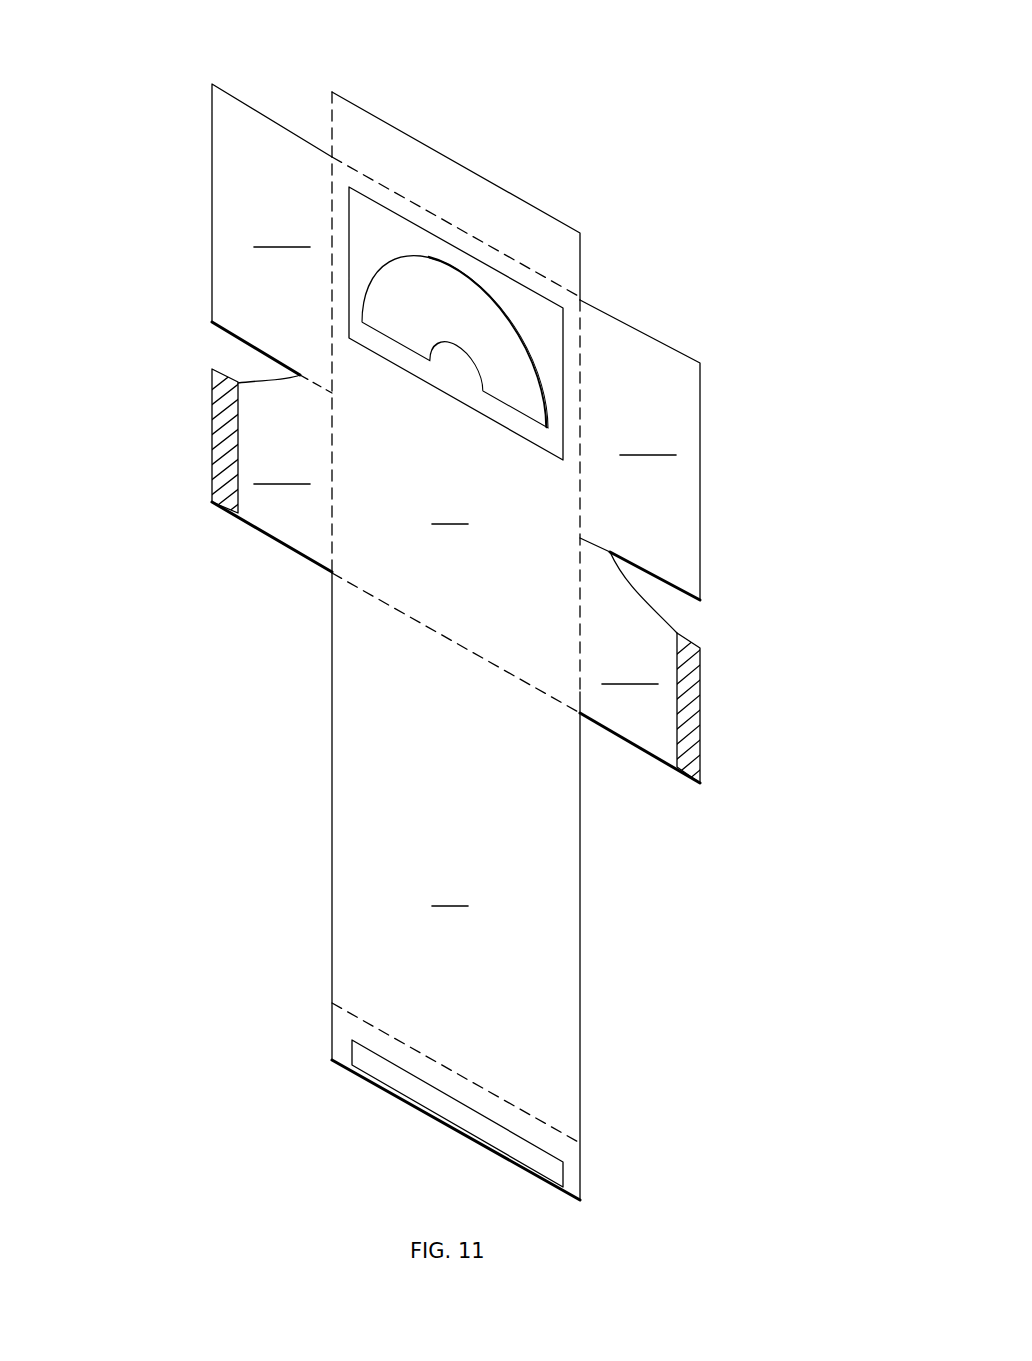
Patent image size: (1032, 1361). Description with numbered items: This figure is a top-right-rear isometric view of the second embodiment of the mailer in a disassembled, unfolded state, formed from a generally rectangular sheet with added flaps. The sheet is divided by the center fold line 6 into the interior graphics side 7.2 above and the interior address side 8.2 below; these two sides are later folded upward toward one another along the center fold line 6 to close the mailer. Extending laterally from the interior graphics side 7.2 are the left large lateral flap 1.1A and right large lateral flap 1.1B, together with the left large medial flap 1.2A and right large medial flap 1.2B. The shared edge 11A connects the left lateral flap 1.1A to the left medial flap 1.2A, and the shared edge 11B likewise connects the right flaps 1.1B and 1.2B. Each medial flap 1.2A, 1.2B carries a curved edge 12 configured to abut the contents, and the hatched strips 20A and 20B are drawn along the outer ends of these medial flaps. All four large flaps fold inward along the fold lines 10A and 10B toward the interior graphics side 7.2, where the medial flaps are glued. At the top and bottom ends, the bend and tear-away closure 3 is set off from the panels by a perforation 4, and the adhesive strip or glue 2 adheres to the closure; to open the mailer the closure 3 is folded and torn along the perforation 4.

The adhesive strip or glue 2 is at (410, 1090).
The bend and tear-away closure 3 is at (488, 200).
The perforation 4 is at (546, 298).
The center fold line 6 is at (395, 615).
The interior graphics side 7.2 is at (450, 511).
The interior address side 8.2 is at (450, 893).
The fold line 10A is at (333, 190).
The fold line 10B is at (580, 354).
The shared edge 11A is at (318, 386).
The shared edge 11B is at (582, 534).
The curved edge 12 is at (244, 384).
The adhesive strip 20A is at (212, 480).
The adhesive strip 20B is at (694, 722).
The left large lateral flap 1.1A is at (272, 203).
The right large lateral flap 1.1B is at (640, 450).
The left large medial flap 1.2A is at (272, 473).
The right large medial flap 1.2B is at (640, 720).